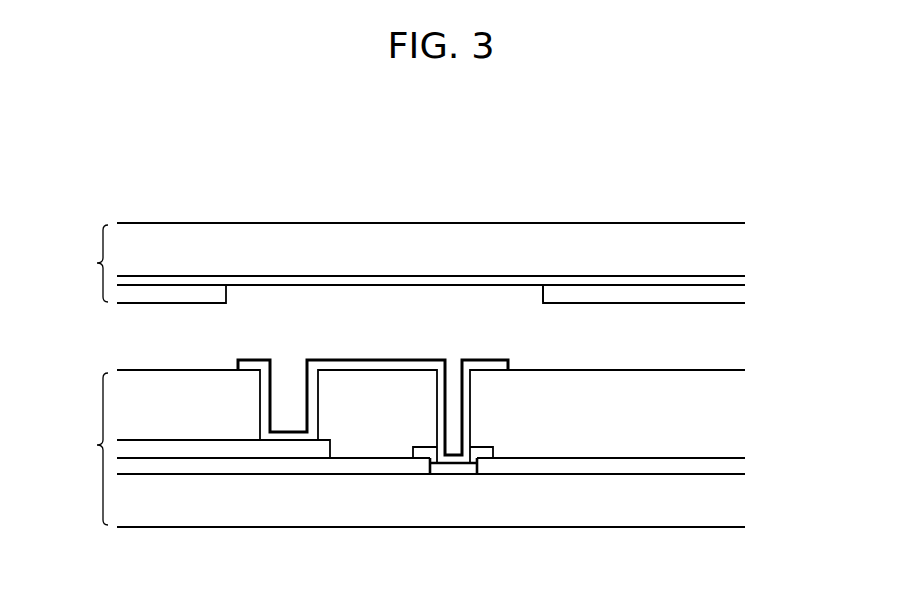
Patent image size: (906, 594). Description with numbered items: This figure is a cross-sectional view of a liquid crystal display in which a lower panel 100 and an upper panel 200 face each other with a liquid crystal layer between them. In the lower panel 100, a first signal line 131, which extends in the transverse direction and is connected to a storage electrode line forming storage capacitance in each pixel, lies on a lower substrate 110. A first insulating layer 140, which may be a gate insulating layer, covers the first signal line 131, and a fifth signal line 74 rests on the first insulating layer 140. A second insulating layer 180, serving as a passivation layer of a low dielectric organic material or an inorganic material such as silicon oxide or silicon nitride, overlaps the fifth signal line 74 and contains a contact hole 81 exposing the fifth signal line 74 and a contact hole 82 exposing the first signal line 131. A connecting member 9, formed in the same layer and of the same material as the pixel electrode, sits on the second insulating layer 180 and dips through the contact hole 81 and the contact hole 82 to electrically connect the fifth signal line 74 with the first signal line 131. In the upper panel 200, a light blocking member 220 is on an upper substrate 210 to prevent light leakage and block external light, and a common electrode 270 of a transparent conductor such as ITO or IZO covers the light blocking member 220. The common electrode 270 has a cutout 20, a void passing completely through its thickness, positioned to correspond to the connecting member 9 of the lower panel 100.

The upper panel 200 is at (81, 263).
The upper substrate 210 is at (727, 248).
The light blocking member 220 is at (733, 278).
The common electrode 270 is at (168, 293).
The cutout 20 is at (538, 295).
The lower panel 100 is at (81, 449).
The lower substrate 110 is at (727, 503).
The first insulating layer 140 is at (733, 466).
The first signal line 131 is at (455, 466).
The fifth signal line 74 is at (218, 450).
The second insulating layer 180 is at (727, 415).
The contact hole 81 is at (312, 392).
The connecting member 9 is at (368, 364).
The contact hole 82 is at (466, 390).